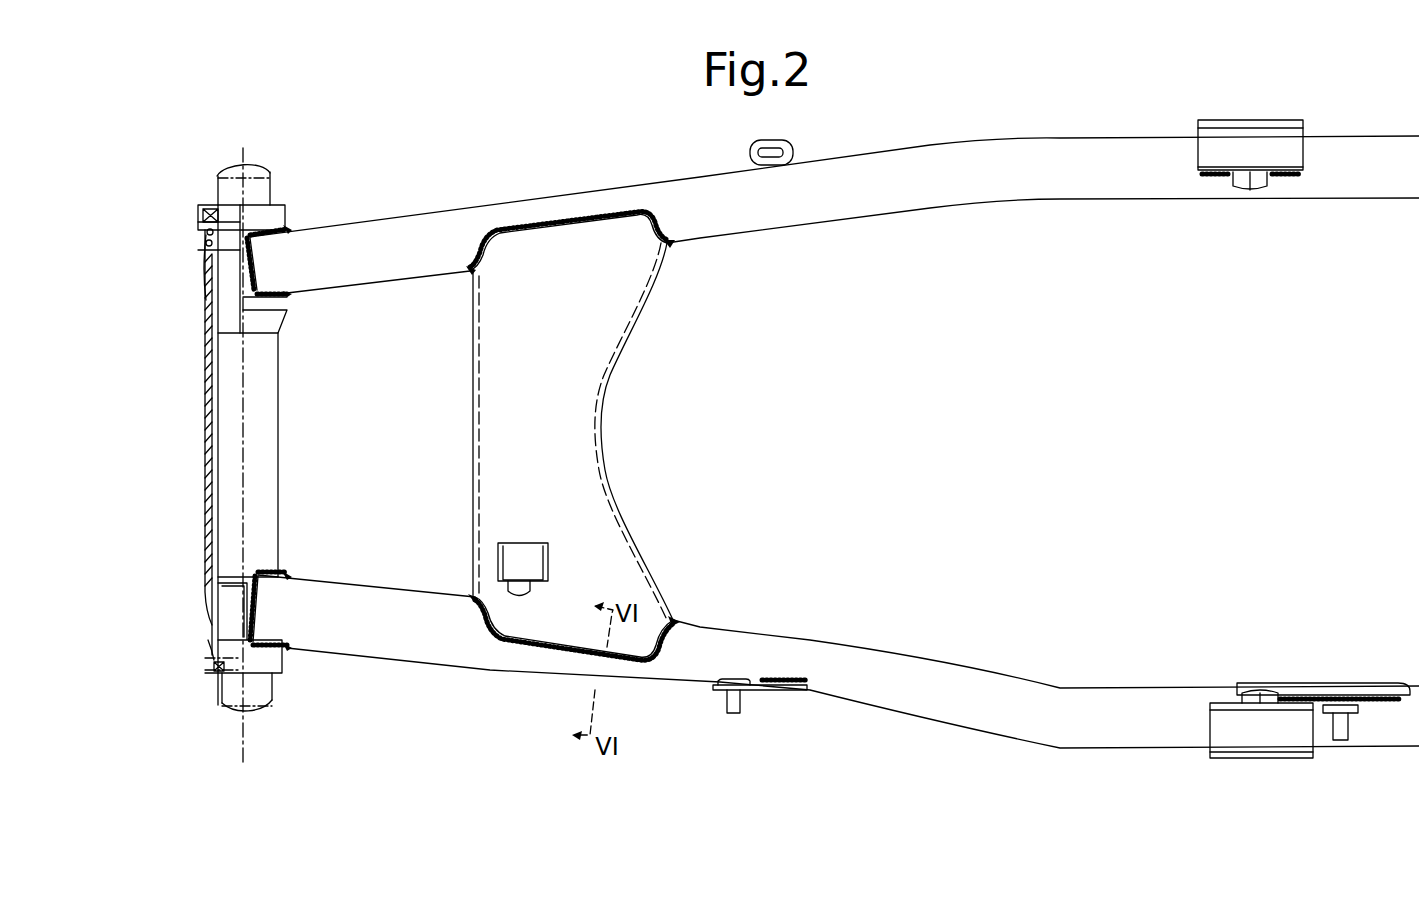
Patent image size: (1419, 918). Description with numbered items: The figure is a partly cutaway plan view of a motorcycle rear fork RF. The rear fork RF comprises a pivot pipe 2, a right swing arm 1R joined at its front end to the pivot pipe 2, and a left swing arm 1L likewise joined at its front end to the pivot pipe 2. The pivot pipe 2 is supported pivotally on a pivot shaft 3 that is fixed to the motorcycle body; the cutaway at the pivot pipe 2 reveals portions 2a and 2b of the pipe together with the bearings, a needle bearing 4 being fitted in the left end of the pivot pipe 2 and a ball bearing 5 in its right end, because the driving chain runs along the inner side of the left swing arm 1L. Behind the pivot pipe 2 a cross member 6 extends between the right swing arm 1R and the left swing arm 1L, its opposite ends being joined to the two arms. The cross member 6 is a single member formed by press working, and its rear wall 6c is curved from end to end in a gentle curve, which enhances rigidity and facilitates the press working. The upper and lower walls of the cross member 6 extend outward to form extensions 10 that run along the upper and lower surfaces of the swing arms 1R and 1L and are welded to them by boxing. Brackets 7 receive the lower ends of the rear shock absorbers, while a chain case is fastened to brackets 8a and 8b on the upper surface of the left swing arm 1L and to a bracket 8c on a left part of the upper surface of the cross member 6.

The rear fork RF is at (630, 136).
The right swing arm 1R is at (877, 152).
The left swing arm 1L is at (887, 707).
The pivot pipe 2 is at (212, 452).
The upper hub portion 2a is at (205, 290).
The lower hub portion 2b is at (208, 640).
The pivot shaft 3 is at (272, 176).
The needle bearing 4 is at (240, 660).
The ball bearing 5 is at (198, 238).
The cross member 6 is at (493, 430).
The rear wall 6c is at (622, 507).
The brackets 7 is at (1213, 132).
The bracket 8a is at (1355, 718).
The bracket 8b is at (748, 700).
The bracket 8c is at (552, 566).
The extensions 10 is at (540, 243).